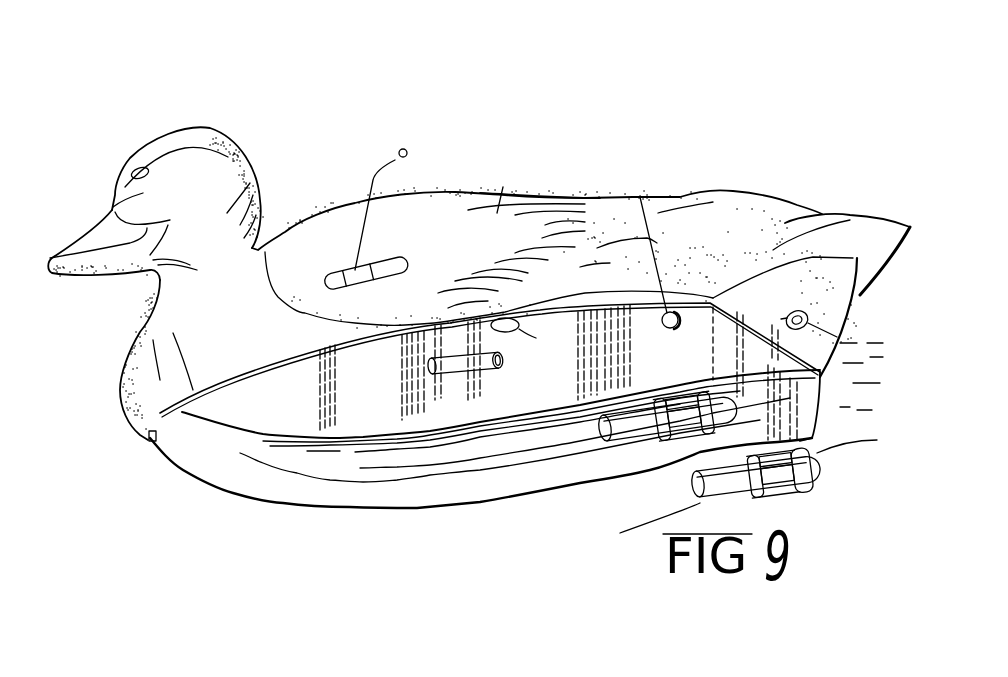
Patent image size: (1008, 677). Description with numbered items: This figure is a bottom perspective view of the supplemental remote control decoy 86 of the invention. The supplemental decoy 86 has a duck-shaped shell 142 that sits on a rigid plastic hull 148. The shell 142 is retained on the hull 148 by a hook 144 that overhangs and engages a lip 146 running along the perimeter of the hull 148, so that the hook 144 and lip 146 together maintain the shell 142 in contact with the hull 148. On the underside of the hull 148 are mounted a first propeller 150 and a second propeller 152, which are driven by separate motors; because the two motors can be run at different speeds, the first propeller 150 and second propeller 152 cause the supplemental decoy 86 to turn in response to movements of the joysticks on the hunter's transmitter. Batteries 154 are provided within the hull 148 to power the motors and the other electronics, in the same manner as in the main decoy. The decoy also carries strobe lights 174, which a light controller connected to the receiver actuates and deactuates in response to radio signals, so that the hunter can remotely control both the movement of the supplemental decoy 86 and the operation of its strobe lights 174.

The supplemental decoy 86 is at (463, 121).
The shell 142 is at (544, 187).
The hook 144 is at (150, 442).
The lip 146 is at (170, 352).
The rigid plastic hull 148 is at (355, 512).
The first propeller 150 is at (655, 445).
The second propeller 152 is at (698, 503).
The batteries 154 is at (430, 372).
The strobe lights 174 is at (534, 346).